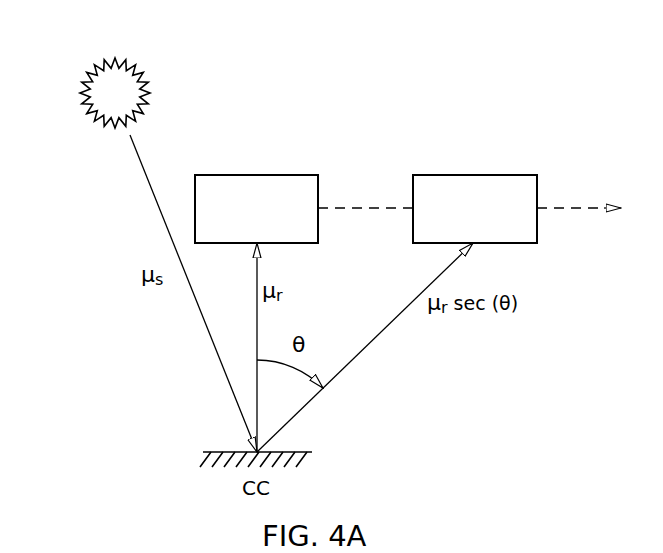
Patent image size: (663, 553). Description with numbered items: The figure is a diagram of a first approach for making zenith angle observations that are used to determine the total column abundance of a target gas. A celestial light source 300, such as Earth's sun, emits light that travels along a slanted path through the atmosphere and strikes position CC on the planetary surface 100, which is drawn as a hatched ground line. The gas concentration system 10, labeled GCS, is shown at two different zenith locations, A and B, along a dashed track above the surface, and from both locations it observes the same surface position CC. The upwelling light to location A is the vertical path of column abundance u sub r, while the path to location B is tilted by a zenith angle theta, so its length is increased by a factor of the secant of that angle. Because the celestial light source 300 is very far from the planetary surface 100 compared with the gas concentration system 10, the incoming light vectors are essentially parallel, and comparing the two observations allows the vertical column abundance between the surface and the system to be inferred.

The celestial light source 300 is at (92, 68).
The gas concentration system 10 is at (297, 174).
The planetary surface 100 is at (293, 451).